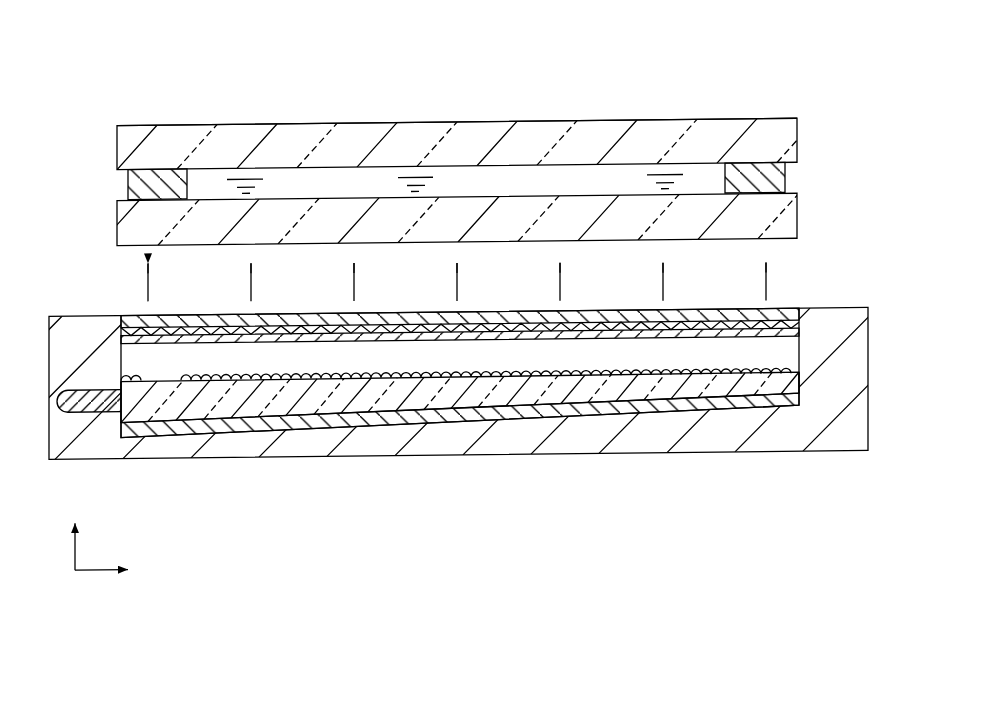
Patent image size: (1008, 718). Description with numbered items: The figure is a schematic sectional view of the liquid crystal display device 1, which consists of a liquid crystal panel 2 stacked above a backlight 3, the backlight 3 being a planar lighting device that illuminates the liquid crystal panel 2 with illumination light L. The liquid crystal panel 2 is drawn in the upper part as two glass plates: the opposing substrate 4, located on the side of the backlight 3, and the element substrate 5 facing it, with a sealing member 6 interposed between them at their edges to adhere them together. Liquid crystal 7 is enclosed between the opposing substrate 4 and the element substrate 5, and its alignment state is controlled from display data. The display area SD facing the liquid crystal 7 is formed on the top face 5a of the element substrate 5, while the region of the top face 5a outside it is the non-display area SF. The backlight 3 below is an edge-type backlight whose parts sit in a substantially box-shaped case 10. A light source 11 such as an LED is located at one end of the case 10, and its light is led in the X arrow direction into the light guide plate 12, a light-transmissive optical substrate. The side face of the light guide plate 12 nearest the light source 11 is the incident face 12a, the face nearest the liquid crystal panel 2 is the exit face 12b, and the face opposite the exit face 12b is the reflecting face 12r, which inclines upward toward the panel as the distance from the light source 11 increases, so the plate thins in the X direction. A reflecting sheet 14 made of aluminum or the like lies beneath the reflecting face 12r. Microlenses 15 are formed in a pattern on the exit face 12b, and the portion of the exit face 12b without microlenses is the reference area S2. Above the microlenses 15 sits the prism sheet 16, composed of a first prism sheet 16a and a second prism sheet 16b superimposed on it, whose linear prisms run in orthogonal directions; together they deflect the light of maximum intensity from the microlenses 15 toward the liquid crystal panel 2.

The liquid crystal display device 1 is at (245, 76).
The liquid crystal panel 2 is at (740, 105).
The backlight 3 is at (73, 293).
The opposing substrate 4 is at (800, 221).
The element substrate 5 is at (800, 140).
The top face 5a is at (688, 126).
The sealing member 6 is at (788, 184).
The liquid crystal 7 is at (508, 189).
The case 10 is at (638, 460).
The light source 11 is at (107, 394).
The light guide plate 12 is at (800, 387).
The incident face 12a is at (119, 422).
The exit face 12b is at (456, 358).
The reflecting face 12r is at (799, 405).
The reflecting sheet 14 is at (795, 418).
The microlens 15 is at (675, 379).
The prism sheet 16 is at (494, 310).
The first prism sheet 16a is at (803, 341).
The second prism sheet 16b is at (803, 323).
The non-display area SF is at (137, 111).
The display area SD is at (433, 115).
The reference area S2 is at (160, 389).
The illumination light L is at (762, 294).